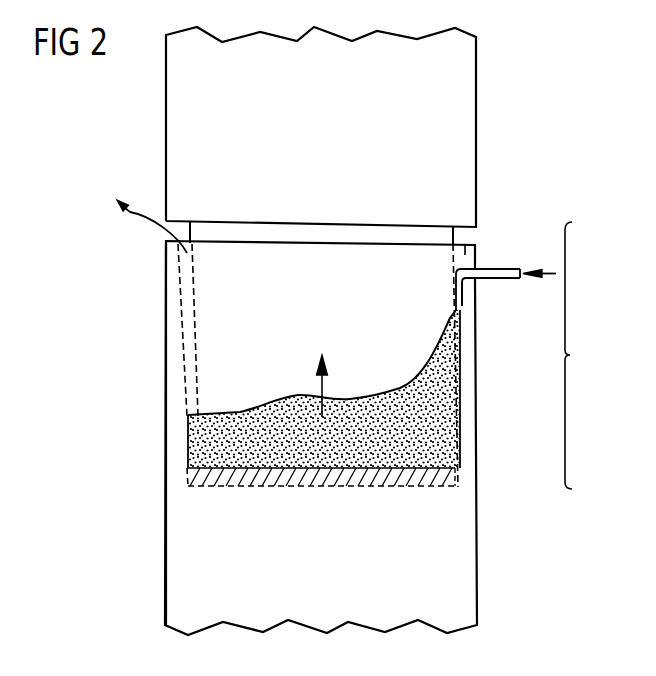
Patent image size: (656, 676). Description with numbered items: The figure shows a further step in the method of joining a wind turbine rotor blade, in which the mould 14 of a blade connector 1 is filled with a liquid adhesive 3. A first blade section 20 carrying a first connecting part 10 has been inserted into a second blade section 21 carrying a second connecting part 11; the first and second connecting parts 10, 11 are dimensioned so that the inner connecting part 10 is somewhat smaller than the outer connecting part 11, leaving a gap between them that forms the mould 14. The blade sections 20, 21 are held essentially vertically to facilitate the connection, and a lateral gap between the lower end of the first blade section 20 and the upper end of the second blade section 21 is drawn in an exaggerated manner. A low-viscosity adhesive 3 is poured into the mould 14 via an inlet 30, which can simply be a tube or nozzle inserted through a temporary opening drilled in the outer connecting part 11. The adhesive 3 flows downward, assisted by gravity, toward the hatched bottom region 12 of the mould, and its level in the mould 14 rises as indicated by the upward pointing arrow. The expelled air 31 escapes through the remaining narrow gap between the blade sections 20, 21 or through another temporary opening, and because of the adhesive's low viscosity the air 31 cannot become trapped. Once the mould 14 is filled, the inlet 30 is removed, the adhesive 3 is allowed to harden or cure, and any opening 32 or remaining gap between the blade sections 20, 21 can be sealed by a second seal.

The blade connector 1 is at (574, 355).
The adhesive 3 is at (433, 428).
The first connecting part 10 is at (205, 308).
The second connecting part 11 is at (165, 354).
The bottom layer of crucible 12 is at (330, 480).
The mould 14 is at (185, 390).
The first blade section 20 is at (175, 120).
The second blade section 21 is at (172, 552).
The inlet 30 is at (502, 268).
The expelled air 31 is at (137, 223).
The opening 32 is at (478, 282).